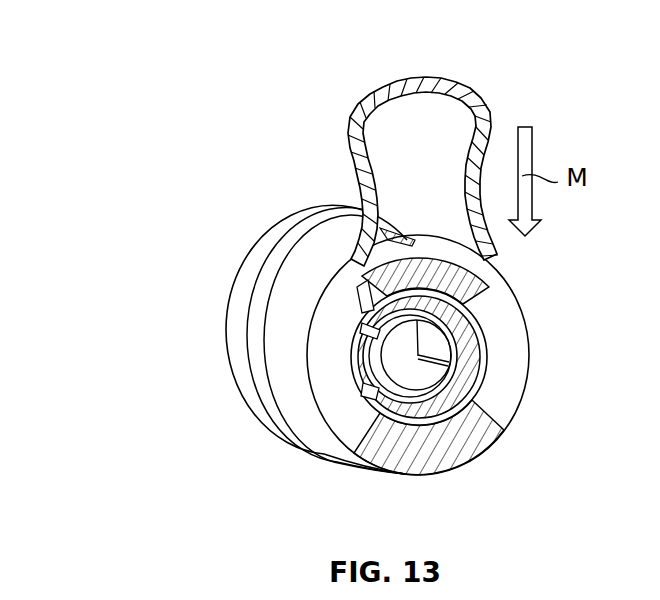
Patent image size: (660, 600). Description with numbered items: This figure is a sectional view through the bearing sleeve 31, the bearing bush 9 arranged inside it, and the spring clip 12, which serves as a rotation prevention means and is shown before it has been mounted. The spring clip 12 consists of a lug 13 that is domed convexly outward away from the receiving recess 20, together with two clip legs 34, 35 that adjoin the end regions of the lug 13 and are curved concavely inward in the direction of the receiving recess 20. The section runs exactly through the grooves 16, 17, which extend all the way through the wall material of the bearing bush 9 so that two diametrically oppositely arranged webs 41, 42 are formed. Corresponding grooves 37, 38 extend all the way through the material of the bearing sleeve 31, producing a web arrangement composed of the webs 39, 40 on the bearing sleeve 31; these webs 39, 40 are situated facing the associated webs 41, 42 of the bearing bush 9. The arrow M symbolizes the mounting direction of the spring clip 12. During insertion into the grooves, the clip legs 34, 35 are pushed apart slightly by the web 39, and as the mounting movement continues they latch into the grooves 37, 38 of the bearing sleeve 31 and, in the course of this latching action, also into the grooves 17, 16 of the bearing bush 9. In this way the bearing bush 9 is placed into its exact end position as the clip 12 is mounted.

The bearing bush 9 is at (356, 394).
The spring clip 12 is at (447, 70).
The lug 13 is at (429, 133).
The groove 16 is at (360, 366).
The groove 17 is at (468, 355).
The receiving recess 20 is at (429, 135).
The bearing sleeve 31 is at (224, 316).
The clip leg 34 is at (365, 183).
The clip leg 35 is at (477, 188).
The groove 37 is at (507, 340).
The groove 38 is at (328, 347).
The web 39 is at (482, 283).
The web 40 is at (473, 452).
The web 41 is at (382, 328).
The web 42 is at (470, 397).